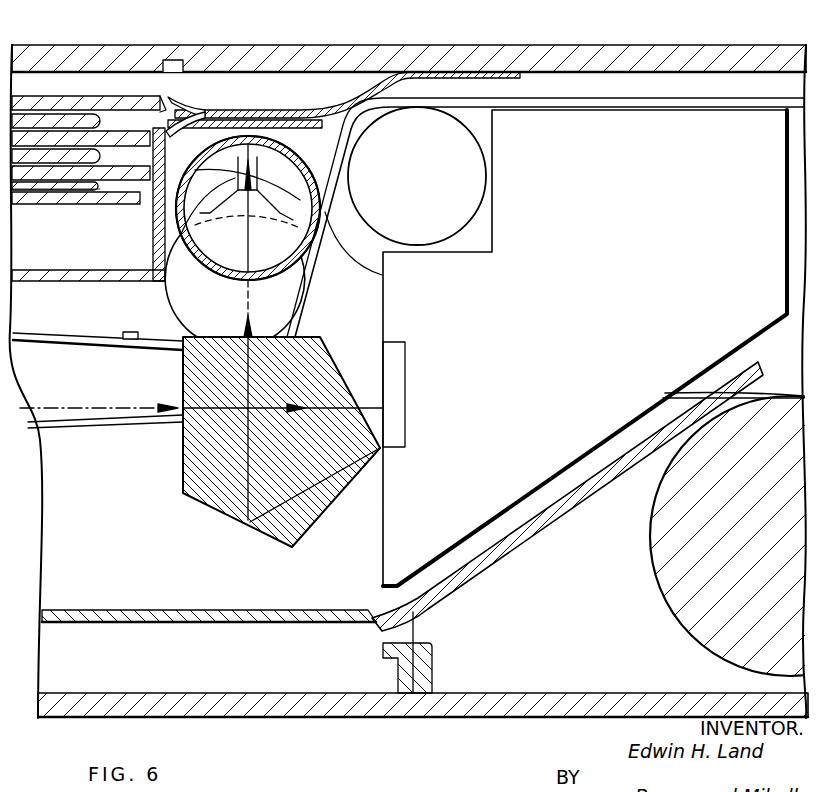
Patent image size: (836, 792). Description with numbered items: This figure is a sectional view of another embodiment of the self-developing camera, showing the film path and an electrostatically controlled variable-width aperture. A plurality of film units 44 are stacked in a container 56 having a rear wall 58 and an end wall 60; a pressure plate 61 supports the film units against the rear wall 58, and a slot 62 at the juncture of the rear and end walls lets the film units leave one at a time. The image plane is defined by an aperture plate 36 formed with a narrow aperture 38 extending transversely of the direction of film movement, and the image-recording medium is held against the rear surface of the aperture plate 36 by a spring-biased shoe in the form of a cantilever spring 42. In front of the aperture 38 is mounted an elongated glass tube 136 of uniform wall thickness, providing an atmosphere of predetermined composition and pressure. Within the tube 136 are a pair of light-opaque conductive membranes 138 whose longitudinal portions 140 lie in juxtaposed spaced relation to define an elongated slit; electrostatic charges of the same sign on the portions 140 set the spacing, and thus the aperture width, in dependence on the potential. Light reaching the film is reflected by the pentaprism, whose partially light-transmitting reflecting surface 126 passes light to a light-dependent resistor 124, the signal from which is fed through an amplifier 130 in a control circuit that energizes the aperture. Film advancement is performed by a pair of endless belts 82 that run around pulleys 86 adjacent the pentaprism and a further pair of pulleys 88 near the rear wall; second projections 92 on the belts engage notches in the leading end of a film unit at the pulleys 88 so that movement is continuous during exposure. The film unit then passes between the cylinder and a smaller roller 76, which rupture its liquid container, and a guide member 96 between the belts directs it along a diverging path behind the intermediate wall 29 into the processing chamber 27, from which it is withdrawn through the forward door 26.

The forward door 26 is at (282, 710).
The processing chamber 27 is at (63, 690).
The intermediate wall 29 is at (163, 613).
The aperture plate 36 is at (208, 123).
The aperture 38 is at (344, 100).
The cantilever spring 42 is at (443, 72).
The film units 44 is at (107, 194).
The container 56 is at (81, 292).
The rear wall 58 is at (42, 96).
The end wall 60 is at (164, 152).
The pressure plate 61 is at (33, 200).
The slot 62 is at (173, 108).
The roller 76 is at (658, 560).
The endless belts 82 is at (600, 100).
The pulleys 86 is at (222, 308).
The pulleys 88 is at (448, 145).
The second projections 92 is at (146, 341).
The guide member 96 is at (538, 518).
The light-dependent resistor 124 is at (397, 402).
The reflecting surface 126 is at (331, 361).
The amplifier 130 is at (500, 453).
The elongated tube 136 is at (290, 150).
The membranes 138 is at (296, 211).
The longitudinal portions 140 is at (258, 175).